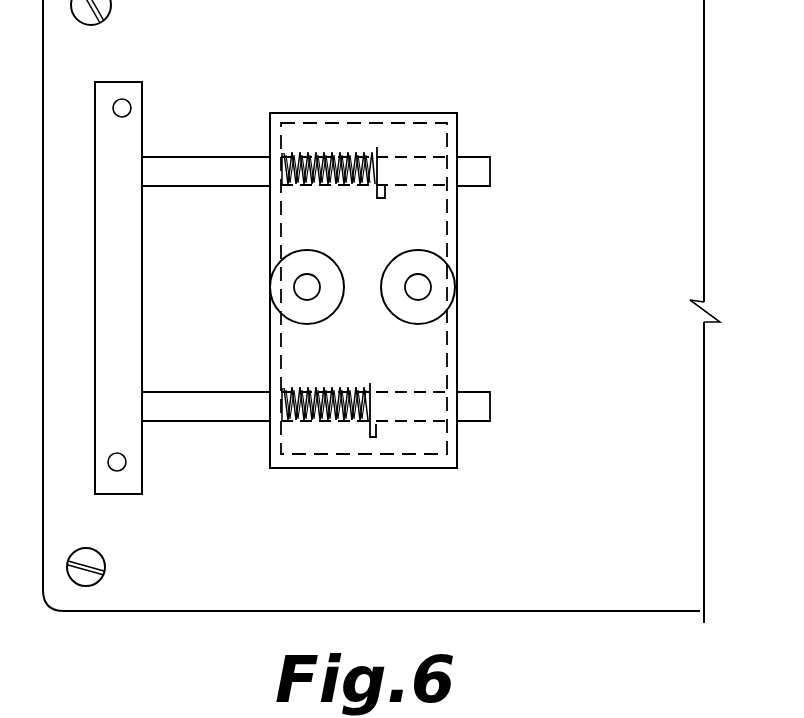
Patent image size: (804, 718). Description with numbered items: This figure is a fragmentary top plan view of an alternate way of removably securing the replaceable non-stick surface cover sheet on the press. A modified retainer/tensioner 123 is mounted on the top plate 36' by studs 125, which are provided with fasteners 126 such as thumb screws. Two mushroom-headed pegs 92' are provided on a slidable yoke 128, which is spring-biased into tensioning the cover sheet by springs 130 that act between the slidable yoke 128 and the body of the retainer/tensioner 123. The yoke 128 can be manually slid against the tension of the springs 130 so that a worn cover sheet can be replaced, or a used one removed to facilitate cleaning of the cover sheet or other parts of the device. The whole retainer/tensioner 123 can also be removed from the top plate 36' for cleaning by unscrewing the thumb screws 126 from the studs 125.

The top plate 36' is at (381, 324).
The mushroom-headed pegs 92' is at (148, 306).
The retainer/tensioner 123 is at (369, 466).
The studs 125 is at (316, 277).
The fasteners 126 is at (431, 252).
The slidable yoke 128 is at (186, 423).
The springs 130 is at (346, 153).